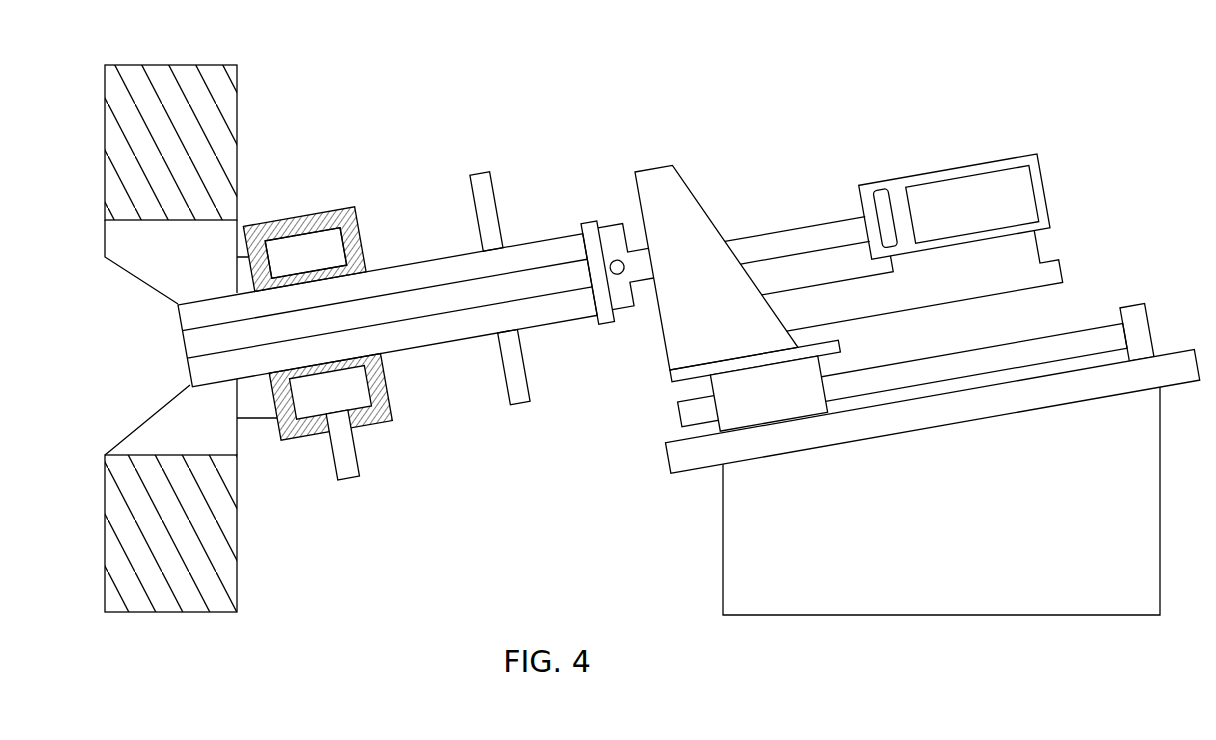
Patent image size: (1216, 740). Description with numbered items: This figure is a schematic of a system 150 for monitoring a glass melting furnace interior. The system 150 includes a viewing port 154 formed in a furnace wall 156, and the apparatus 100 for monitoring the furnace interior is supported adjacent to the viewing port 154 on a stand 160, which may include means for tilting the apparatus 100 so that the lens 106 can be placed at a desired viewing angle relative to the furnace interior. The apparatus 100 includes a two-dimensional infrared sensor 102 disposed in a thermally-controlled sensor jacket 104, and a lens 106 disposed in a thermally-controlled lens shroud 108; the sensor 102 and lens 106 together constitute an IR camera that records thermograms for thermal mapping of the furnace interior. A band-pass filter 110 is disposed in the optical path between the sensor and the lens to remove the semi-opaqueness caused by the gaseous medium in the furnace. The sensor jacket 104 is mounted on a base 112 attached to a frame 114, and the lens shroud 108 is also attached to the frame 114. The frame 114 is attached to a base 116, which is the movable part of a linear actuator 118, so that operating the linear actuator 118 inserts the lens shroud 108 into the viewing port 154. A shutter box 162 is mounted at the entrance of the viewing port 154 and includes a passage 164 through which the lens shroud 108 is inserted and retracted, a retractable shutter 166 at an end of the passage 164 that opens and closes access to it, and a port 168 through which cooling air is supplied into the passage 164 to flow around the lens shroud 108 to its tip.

The apparatus for monitoring a furnace interior 100 is at (663, 141).
The two-dimensional infrared sensor 102 is at (972, 190).
The sensor jacket 104 is at (1023, 157).
The lens 106 is at (552, 265).
The lens shroud 108 is at (430, 260).
The band-pass filter 110 is at (878, 200).
The base 112 is at (1023, 280).
The frame 114 is at (680, 196).
The base 116 is at (767, 417).
The linear actuator 118 is at (1035, 358).
The system for monitoring a furnace interior 150 is at (467, 86).
The viewing port 154 is at (167, 297).
The furnace wall 156 is at (142, 72).
The stand 160 is at (910, 582).
The shutter box 162 is at (376, 425).
The passage 164 is at (308, 277).
The retractable shutter 166 is at (357, 268).
The port 168 is at (343, 472).